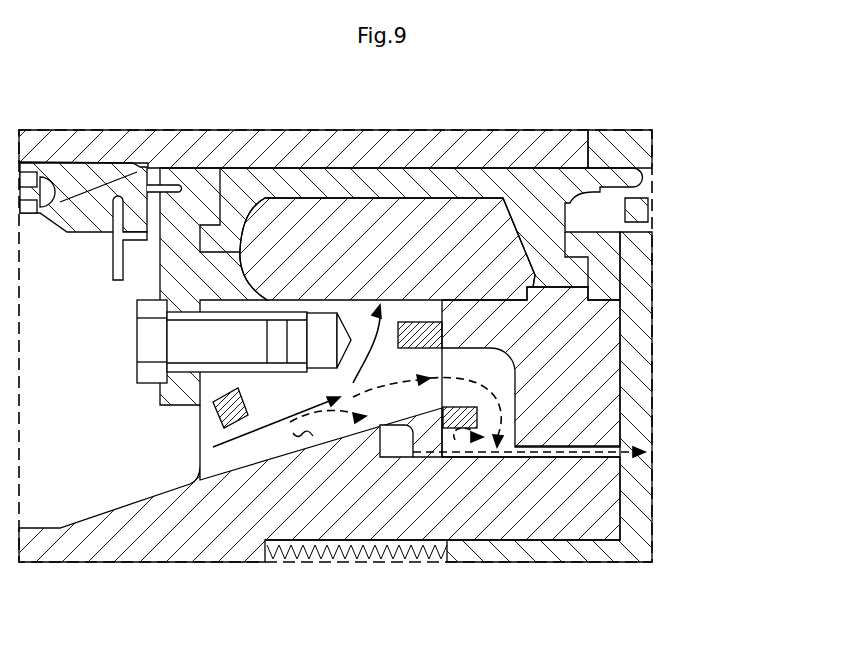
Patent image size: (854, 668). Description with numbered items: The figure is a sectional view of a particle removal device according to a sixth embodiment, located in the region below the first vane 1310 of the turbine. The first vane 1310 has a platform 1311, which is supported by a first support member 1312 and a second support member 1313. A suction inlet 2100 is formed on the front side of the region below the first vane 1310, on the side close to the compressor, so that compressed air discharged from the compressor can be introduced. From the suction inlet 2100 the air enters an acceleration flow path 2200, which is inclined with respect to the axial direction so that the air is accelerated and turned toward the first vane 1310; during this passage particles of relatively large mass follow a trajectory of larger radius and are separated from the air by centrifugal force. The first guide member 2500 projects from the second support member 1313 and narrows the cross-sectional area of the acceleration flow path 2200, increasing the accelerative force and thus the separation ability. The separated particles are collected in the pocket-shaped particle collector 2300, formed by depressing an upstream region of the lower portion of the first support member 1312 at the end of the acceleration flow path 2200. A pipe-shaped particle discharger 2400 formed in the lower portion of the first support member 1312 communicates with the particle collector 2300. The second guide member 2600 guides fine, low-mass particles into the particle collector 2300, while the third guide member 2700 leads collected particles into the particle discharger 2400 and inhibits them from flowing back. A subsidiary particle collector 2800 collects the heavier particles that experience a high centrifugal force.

The first vane 1310 is at (438, 145).
The platform 1311 is at (558, 178).
The first support member 1312 is at (602, 333).
The second support member 1313 is at (203, 383).
The suction inlet 2100 is at (200, 462).
The acceleration flow path 2200 is at (298, 438).
The particle collector 2300 is at (507, 397).
The particle discharger 2400 is at (580, 457).
The first guide member 2500 is at (200, 427).
The second guide member 2600 is at (420, 322).
The third guide member 2700 is at (440, 432).
The subsidiary particle collector 2800 is at (380, 457).